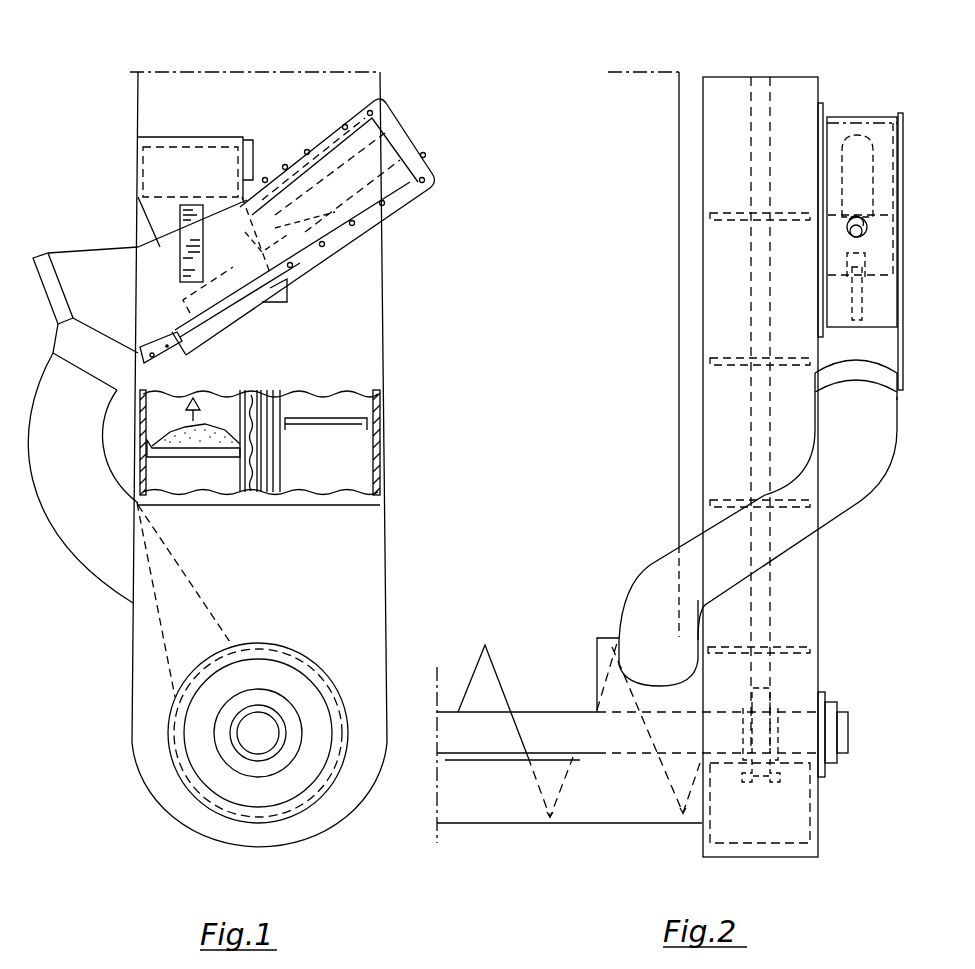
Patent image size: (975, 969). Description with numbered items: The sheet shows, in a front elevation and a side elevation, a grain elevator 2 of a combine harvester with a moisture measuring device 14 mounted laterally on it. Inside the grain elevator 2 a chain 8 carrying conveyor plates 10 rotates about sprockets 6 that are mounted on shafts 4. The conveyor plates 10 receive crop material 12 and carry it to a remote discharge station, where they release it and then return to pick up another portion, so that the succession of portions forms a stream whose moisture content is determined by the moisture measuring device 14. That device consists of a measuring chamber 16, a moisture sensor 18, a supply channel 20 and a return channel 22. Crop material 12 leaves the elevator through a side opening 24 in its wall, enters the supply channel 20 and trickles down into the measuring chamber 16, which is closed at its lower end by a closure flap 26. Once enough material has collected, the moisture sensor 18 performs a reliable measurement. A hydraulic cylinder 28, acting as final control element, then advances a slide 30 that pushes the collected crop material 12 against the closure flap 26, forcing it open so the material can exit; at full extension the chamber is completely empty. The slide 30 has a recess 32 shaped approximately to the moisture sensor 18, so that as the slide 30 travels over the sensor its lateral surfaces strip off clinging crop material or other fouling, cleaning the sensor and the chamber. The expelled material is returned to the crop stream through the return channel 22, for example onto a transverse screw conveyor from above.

In FIG. 1, the grain elevator 2 is at (290, 93).
In FIG. 2, the grain elevator 2 is at (797, 80).
In FIG. 1, the shafts 4 is at (253, 737).
In FIG. 2, the shafts 4 is at (803, 735).
In FIG. 2, the sprockets 6 is at (762, 703).
In FIG. 1, the chain 8 is at (278, 463).
In FIG. 2, the chain 8 is at (762, 630).
In FIG. 1, the conveyor plates 10 is at (367, 428).
In FIG. 2, the conveyor plates 10 is at (817, 502).
In FIG. 1, the crop material 12 is at (207, 438).
In FIG. 1, the moisture measuring device 14 is at (357, 257).
In FIG. 2, the moisture measuring device 14 is at (858, 97).
In FIG. 1, the measuring chamber 16 is at (163, 257).
In FIG. 1, the moisture sensor 18 is at (253, 302).
In FIG. 2, the moisture sensor 18 is at (850, 297).
In FIG. 1, the supply channel 20 is at (160, 215).
In FIG. 1, the return channel 22 is at (98, 547).
In FIG. 2, the return channel 22 is at (653, 597).
In FIG. 1, the side opening 24 is at (175, 172).
In FIG. 2, the side opening 24 is at (818, 165).
In FIG. 1, the closure flap 26 is at (152, 325).
In FIG. 1, the hydraulic cylinder 28 is at (388, 143).
In FIG. 1, the slide 30 is at (320, 163).
In FIG. 2, the slide 30 is at (838, 247).
In FIG. 2, the recess 32 is at (847, 263).